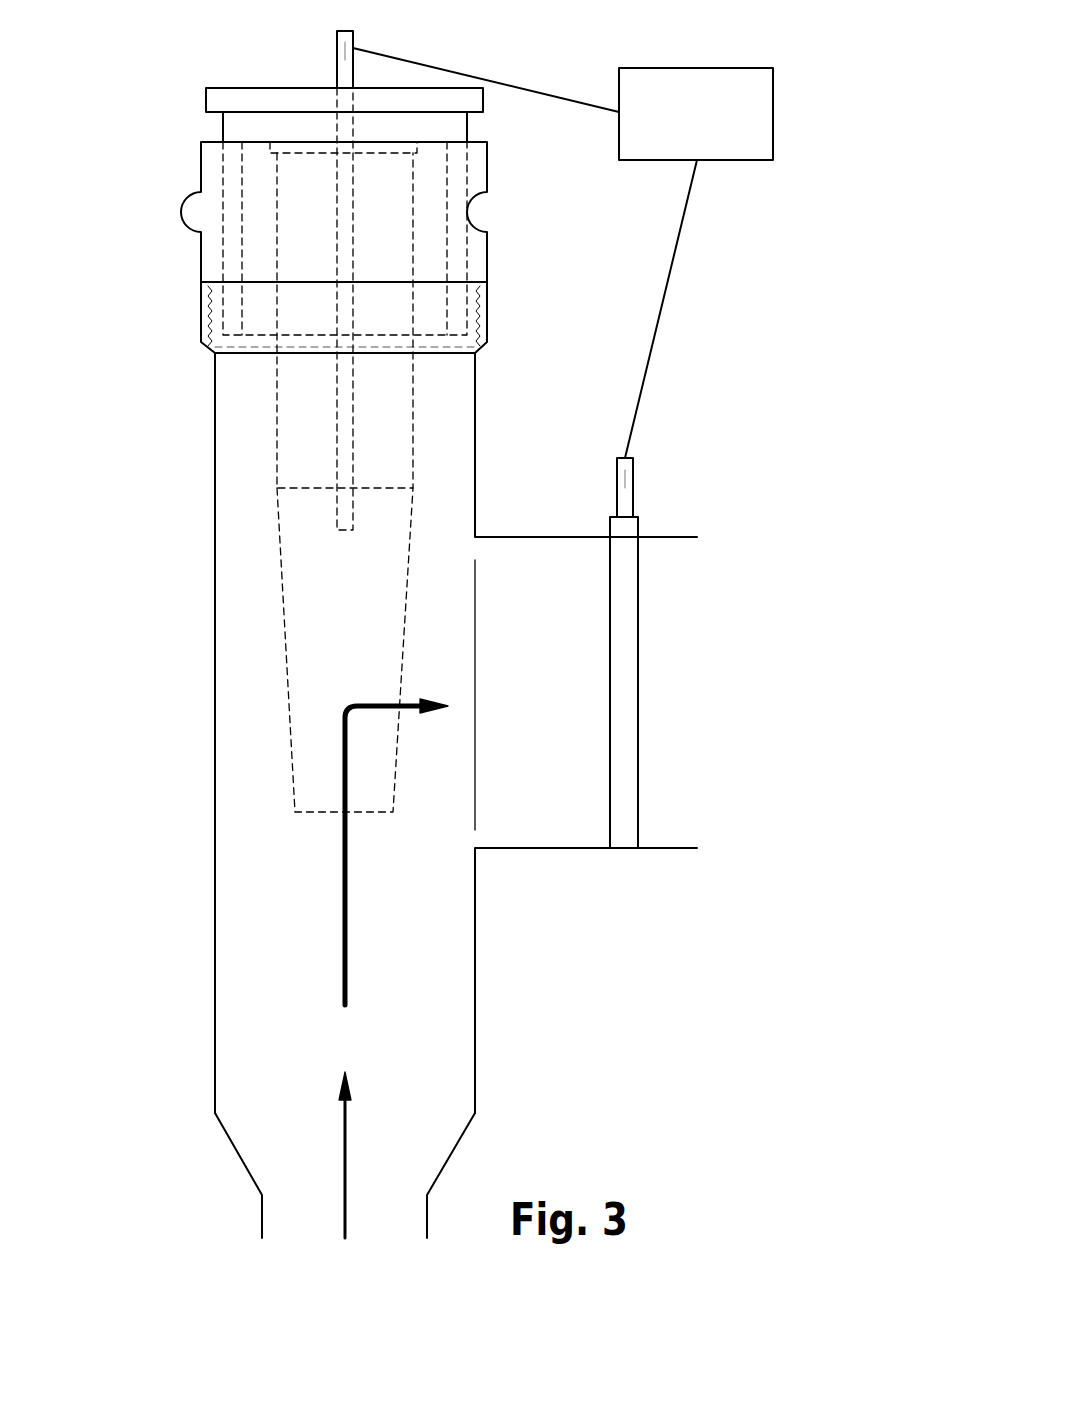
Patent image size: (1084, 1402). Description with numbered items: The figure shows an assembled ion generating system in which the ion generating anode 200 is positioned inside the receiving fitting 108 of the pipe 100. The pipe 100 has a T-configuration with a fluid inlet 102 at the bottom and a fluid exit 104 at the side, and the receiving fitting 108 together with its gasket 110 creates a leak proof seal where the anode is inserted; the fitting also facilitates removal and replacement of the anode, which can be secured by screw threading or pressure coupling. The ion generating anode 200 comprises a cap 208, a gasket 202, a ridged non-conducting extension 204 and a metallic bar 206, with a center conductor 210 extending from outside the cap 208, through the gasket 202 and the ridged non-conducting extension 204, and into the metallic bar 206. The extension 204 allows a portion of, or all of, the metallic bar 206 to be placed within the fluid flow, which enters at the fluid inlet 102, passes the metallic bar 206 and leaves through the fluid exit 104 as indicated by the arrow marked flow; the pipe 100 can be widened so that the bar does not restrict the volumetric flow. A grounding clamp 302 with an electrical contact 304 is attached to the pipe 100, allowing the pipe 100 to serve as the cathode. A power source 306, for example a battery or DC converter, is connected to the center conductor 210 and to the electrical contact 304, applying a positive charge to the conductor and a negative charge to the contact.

The pipe 100 is at (475, 447).
The fluid inlet 102 is at (465, 1078).
The fluid exit 104 is at (588, 767).
The receiving fitting 108 is at (487, 180).
The gasket 110 is at (465, 345).
The ion generating anode 200 is at (262, 572).
The gasket 202 is at (417, 152).
The ridged non-conducting extension 204 is at (412, 260).
The metallic bar 206 is at (403, 662).
The cap 208 is at (206, 100).
The center conductor 210 is at (337, 58).
The grounding clamp 302 is at (638, 633).
The electrical contact 304 is at (617, 487).
The power source 306 is at (773, 128).